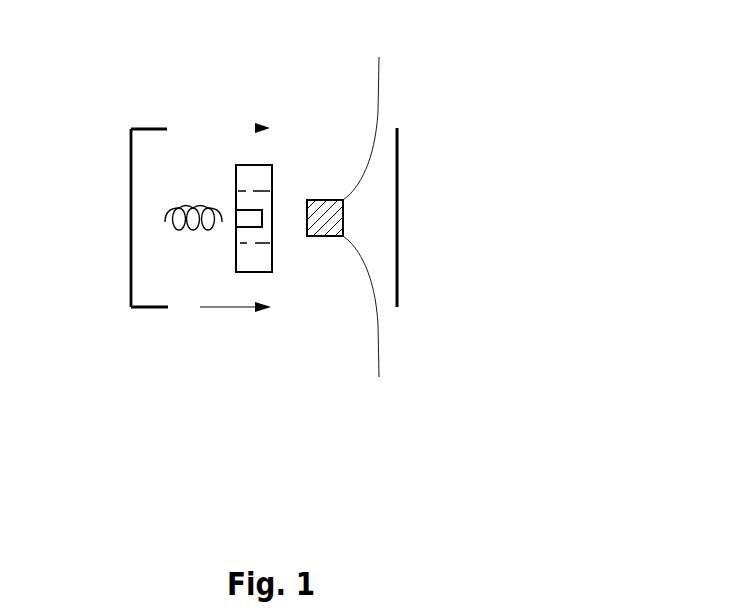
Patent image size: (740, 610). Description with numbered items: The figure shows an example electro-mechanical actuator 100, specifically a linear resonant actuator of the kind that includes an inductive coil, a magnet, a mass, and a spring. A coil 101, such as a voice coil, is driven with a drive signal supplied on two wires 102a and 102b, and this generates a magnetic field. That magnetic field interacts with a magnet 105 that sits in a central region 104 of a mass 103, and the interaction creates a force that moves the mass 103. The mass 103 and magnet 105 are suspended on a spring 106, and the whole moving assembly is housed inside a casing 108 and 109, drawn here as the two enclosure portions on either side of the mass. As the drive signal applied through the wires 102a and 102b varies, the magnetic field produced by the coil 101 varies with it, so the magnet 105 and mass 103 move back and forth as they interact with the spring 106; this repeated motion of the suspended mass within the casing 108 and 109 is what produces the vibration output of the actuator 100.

The electro-mechanical actuator 100 is at (88, 44).
The coil 101 is at (312, 237).
The wire 102a is at (372, 321).
The wire 102b is at (372, 116).
The mass 103 is at (259, 165).
The central region 104 is at (244, 245).
The magnet 105 is at (232, 227).
The spring 106 is at (193, 208).
The casing 108 is at (398, 138).
The casing 109 is at (131, 133).